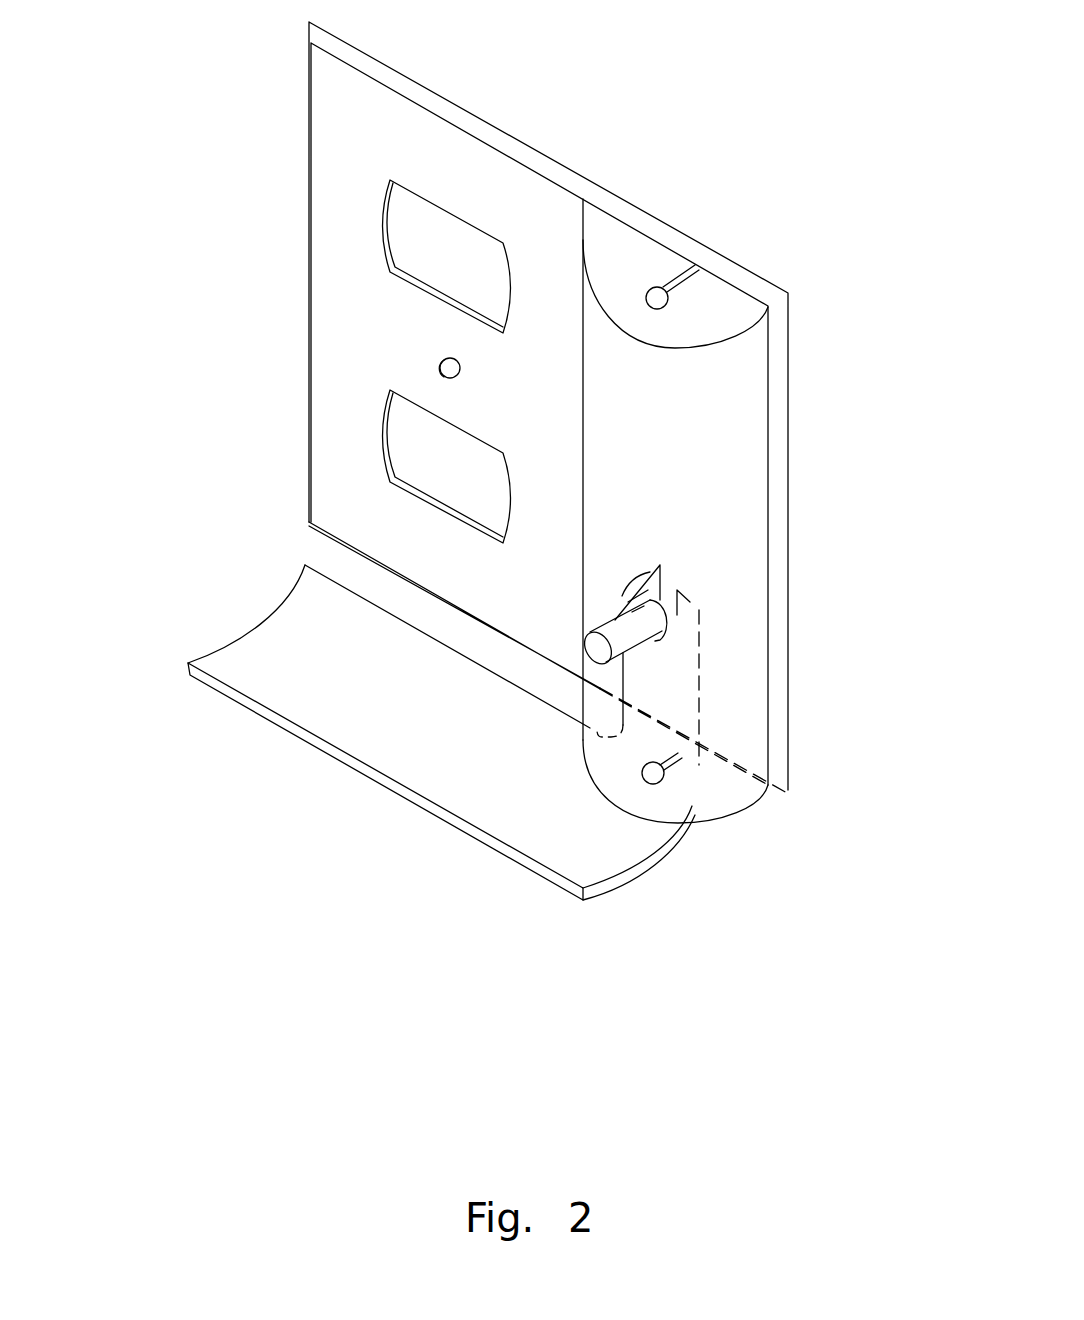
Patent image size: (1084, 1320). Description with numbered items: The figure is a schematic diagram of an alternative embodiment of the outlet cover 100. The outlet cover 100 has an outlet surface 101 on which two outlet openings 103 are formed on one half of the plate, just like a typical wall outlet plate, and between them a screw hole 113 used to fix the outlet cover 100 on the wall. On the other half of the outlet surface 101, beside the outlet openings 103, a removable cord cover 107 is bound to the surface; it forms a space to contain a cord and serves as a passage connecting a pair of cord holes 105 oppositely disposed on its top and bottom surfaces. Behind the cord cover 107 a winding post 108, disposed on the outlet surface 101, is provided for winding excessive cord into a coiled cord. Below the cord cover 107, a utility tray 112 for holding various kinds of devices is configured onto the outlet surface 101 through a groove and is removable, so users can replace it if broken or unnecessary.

The outlet cover 100 is at (612, 42).
The outlet surface 101 is at (330, 87).
The outlet openings 103 is at (408, 223).
The cord holes 105 is at (650, 293).
The cord cover 107 is at (730, 415).
The winding posts 108 is at (653, 621).
The utility tray 112 is at (300, 645).
The screw hole 113 is at (440, 365).